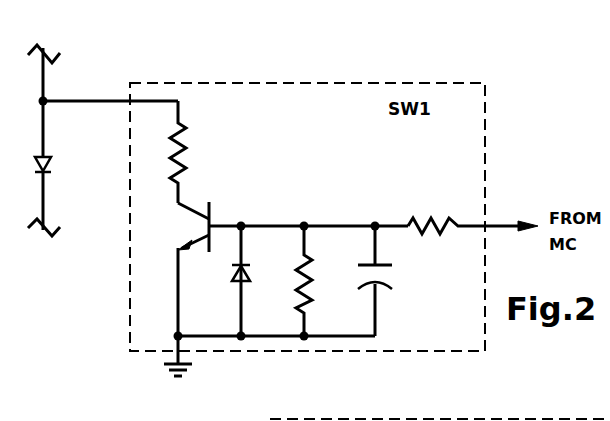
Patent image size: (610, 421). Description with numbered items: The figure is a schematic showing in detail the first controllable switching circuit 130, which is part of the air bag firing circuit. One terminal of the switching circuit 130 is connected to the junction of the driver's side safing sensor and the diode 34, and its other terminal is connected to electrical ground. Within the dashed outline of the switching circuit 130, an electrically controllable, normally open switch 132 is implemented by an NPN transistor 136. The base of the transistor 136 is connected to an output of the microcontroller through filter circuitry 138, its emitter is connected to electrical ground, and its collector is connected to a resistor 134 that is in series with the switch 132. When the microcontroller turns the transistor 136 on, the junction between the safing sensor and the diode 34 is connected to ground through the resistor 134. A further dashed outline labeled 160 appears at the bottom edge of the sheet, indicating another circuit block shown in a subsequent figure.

The diode 34 is at (55, 162).
The first controllable switching circuit 130 is at (310, 83).
The electrically controllable, normally open switch 132 is at (310, 206).
The resistor 134 is at (180, 150).
The NPN transistor 136 is at (192, 228).
The filter circuitry 138 is at (405, 287).
The circuit block 160 is at (450, 419).